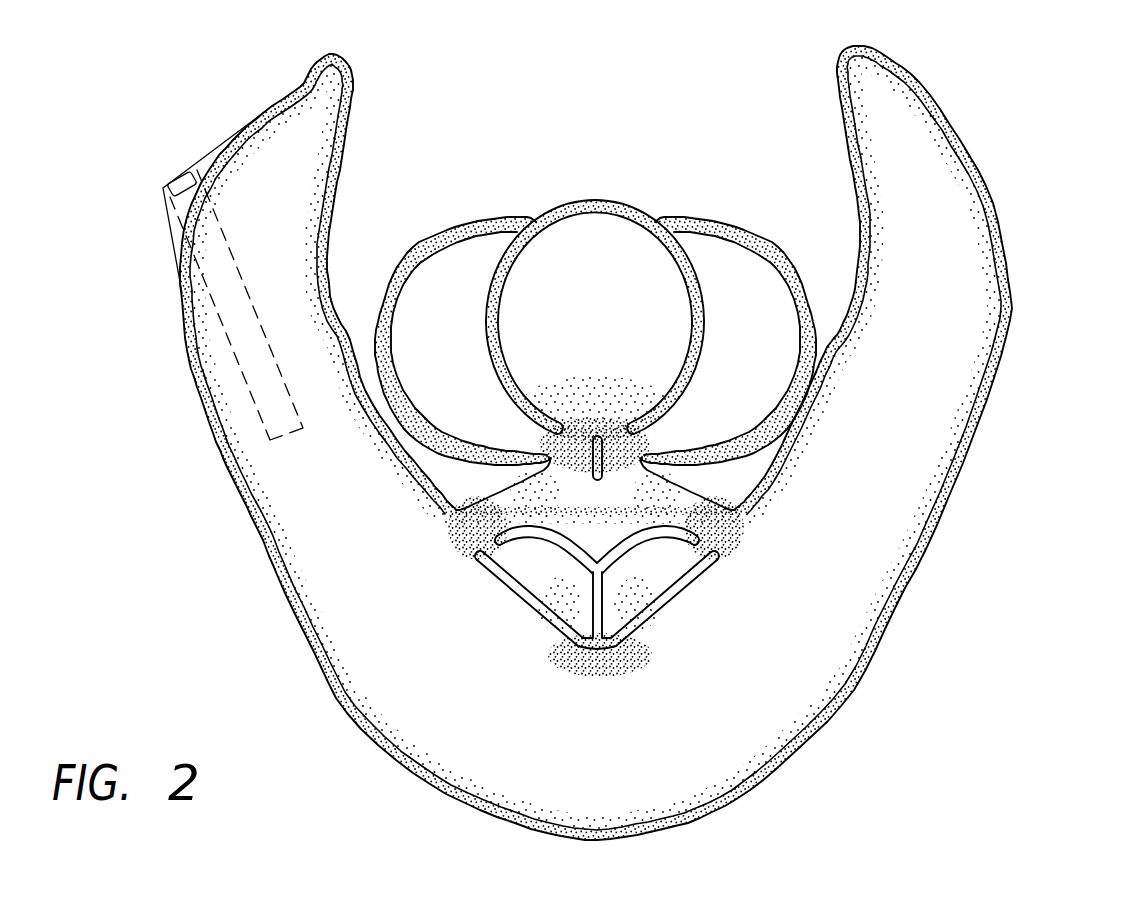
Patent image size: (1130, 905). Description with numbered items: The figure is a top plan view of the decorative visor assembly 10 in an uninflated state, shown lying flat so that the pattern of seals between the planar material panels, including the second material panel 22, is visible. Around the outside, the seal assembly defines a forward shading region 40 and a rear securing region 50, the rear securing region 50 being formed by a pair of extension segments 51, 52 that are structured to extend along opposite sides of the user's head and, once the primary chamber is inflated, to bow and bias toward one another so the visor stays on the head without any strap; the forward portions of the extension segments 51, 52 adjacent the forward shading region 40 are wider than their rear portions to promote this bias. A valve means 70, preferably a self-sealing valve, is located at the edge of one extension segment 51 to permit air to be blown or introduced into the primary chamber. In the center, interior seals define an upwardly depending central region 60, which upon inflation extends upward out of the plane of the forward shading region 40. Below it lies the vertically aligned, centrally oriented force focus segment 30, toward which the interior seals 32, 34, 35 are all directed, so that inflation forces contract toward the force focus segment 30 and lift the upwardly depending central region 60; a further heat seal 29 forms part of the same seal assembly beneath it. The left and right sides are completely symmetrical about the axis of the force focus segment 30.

The decorative visor assembly 10 is at (500, 176).
The second material panel 22 is at (600, 751).
The heat seal 29 is at (540, 537).
The force focus segment 30 is at (600, 463).
The interior seal 32 is at (488, 307).
The interior seal 34 is at (498, 502).
The interior seal 35 is at (471, 445).
The forward shading region 40 is at (748, 716).
The rear securing region 50 is at (273, 140).
The extension segment 51 is at (300, 180).
The extension segment 52 is at (965, 240).
The upwardly depending central region 60 is at (622, 243).
The valve means 70 is at (166, 167).